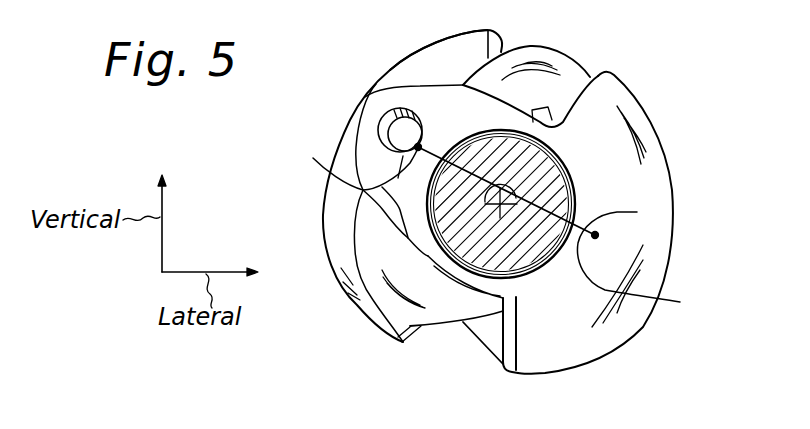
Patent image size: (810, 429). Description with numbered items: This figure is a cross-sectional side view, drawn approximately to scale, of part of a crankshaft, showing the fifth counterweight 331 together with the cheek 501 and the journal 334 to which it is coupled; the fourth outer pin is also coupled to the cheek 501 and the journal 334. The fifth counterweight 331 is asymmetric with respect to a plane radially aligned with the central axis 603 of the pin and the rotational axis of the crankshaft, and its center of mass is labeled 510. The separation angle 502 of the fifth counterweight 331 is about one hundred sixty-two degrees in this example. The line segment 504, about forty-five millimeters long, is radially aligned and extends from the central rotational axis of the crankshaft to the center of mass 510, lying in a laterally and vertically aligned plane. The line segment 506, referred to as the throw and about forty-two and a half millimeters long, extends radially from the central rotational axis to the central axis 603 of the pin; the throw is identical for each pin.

The cheek 501 is at (435, 99).
The central axis 603 is at (418, 148).
The line segment 506 is at (314, 159).
The fifth counterweight 331 is at (640, 122).
The separation angle 502 is at (553, 163).
The center of mass 510 is at (637, 212).
The journal 334 is at (516, 262).
The line segment 504 is at (680, 302).